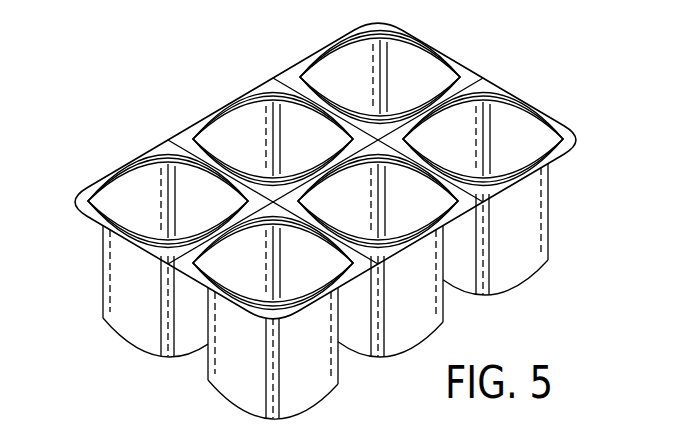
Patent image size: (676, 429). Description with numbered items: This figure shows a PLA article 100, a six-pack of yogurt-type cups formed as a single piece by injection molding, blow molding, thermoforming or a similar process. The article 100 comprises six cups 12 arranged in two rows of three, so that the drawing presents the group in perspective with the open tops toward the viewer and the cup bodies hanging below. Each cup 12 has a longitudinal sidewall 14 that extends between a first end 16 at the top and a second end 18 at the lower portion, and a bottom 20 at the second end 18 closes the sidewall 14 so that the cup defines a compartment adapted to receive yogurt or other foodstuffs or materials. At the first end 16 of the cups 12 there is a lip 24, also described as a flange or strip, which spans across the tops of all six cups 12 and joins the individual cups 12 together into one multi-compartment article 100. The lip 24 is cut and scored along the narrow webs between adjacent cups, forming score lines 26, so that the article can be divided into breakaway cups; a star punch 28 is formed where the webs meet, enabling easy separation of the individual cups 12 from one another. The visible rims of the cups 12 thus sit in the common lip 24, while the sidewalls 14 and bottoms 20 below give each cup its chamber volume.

The PLA article 100 is at (321, 218).
The cup 12 is at (526, 244).
The longitudinal sidewall 14 is at (528, 215).
The first end 16 is at (533, 190).
The second end 18 is at (528, 263).
The bottom 20 is at (508, 293).
The lip 24 is at (568, 136).
The score line 26 is at (160, 258).
The star punch 28 is at (250, 130).